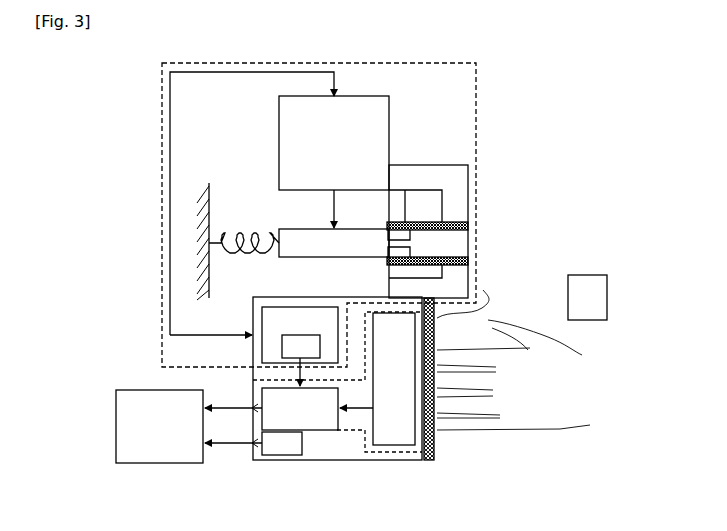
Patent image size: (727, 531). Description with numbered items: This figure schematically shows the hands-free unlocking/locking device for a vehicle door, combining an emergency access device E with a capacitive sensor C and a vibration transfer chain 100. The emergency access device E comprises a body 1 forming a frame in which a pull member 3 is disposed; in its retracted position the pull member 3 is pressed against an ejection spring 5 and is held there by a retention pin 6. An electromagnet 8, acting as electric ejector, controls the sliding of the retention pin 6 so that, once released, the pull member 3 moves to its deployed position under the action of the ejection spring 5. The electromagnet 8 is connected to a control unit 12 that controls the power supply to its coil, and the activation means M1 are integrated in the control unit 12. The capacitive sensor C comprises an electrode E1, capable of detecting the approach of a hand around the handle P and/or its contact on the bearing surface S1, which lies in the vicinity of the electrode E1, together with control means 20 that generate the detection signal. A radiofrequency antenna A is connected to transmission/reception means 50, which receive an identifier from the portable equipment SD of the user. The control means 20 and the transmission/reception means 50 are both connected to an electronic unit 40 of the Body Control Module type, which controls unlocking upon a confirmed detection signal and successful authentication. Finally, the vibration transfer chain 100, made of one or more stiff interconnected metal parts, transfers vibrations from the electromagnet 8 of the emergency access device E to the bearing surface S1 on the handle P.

The emergency access device E is at (477, 112).
The electrode E1 is at (495, 285).
The electromagnet 8 is at (372, 112).
The retention pin 6 is at (332, 212).
The ejection spring 5 is at (243, 258).
The pull member 3 is at (340, 244).
The body 1 is at (401, 222).
The vibration transfer chain 100 is at (478, 272).
The radiofrequency antenna A is at (360, 462).
The control unit 12 is at (300, 335).
The activation means M1 is at (301, 346).
The control means 20 is at (300, 409).
The transmission/reception means 50 is at (282, 443).
The electronic unit 40 is at (159, 426).
The handle P is at (396, 462).
The capacitive sensor C is at (426, 462).
The portable equipment SD is at (607, 302).
The bearing surface S1 is at (437, 453).